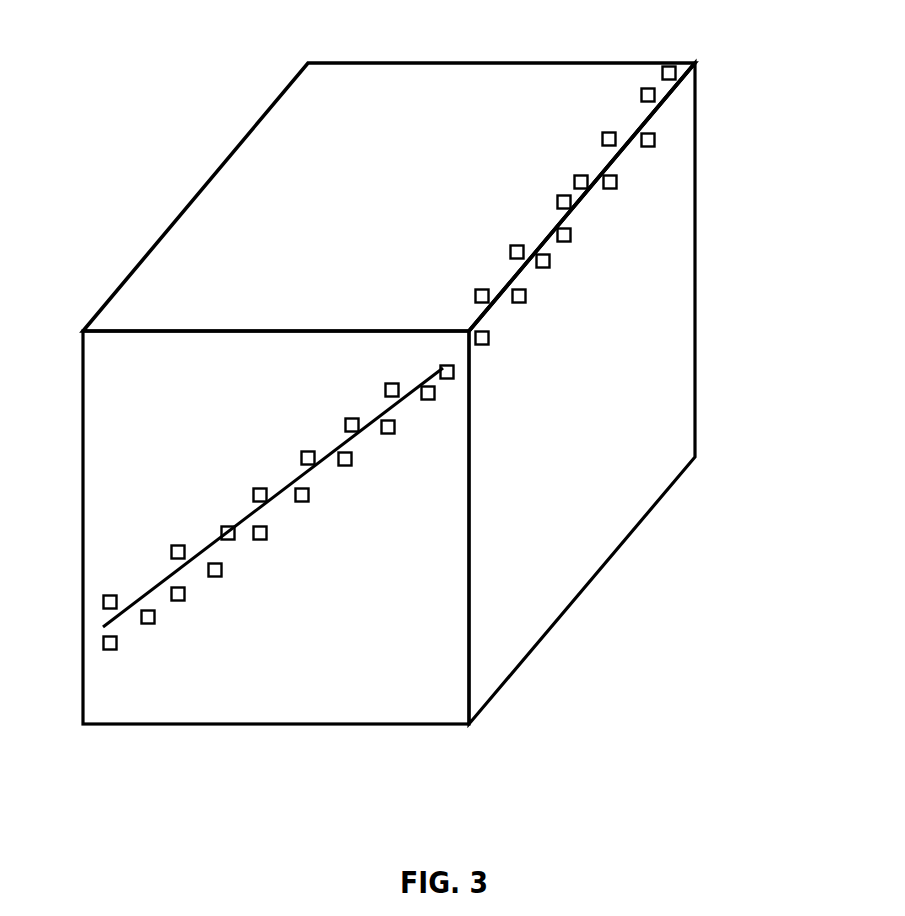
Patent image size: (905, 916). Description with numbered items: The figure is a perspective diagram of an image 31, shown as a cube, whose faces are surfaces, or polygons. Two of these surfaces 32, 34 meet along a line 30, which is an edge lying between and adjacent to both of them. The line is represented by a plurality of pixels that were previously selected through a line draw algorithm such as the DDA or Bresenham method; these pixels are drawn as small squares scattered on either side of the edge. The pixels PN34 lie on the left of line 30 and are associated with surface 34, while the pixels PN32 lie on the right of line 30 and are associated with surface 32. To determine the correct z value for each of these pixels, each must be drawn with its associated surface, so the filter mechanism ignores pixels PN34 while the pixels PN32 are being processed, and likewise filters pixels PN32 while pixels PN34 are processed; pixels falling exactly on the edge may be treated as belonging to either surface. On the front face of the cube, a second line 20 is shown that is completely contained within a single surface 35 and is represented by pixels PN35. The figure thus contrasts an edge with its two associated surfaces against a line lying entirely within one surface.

The image 31 is at (89, 62).
The surface 34 is at (465, 85).
The surface 32 is at (673, 298).
The surface 35 is at (125, 420).
The line 30 is at (648, 122).
The line 20 is at (155, 588).
The pixels PN34 is at (608, 132).
The pixels PN32 is at (610, 189).
The pixels PN35 is at (260, 488).